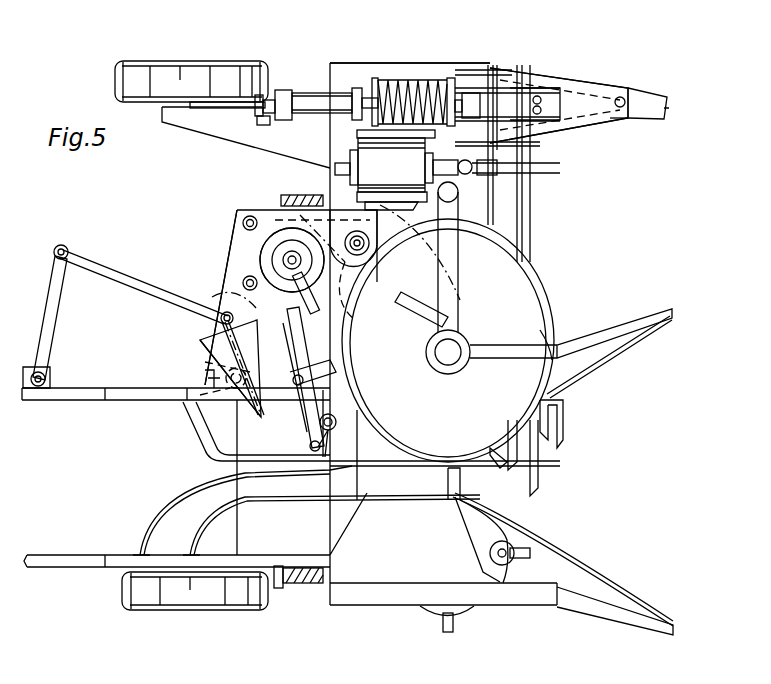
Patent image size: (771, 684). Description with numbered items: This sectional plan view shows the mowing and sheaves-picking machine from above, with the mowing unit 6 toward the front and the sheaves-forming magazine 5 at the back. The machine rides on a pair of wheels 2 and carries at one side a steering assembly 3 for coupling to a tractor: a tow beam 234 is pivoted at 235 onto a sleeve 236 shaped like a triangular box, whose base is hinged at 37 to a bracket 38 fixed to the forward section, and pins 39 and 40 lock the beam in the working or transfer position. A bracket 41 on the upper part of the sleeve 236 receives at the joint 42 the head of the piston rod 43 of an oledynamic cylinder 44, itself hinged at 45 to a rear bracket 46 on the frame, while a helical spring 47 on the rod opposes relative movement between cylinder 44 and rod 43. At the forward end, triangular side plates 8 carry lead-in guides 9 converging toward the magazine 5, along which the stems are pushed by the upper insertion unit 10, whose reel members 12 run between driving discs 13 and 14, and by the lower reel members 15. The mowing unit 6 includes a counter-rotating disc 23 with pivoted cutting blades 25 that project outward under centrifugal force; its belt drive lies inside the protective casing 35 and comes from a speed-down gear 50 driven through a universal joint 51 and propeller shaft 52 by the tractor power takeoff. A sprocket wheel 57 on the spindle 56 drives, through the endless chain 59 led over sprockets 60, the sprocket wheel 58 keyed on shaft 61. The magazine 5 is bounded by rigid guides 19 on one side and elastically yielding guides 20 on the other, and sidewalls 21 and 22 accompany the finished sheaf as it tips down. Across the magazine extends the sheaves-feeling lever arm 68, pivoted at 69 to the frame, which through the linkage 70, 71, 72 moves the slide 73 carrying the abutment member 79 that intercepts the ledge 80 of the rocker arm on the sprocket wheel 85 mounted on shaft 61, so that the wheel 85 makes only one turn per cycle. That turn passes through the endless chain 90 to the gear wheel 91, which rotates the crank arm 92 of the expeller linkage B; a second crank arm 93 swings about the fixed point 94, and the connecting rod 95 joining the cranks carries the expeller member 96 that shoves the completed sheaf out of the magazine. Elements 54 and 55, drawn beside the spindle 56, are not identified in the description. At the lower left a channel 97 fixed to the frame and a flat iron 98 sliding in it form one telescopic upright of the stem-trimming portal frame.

The wheels 2 is at (146, 62).
The steering assembly 3 is at (624, 140).
The magazine 5 is at (193, 480).
The mowing unit 6 is at (530, 533).
The side plates 8 is at (650, 316).
The lead-in guides 9 is at (652, 332).
The upper insertion unit 10 is at (572, 272).
The reel members 12 is at (540, 470).
The driving disc 13 is at (503, 275).
The driving disc 14 is at (553, 312).
The reel members 15 is at (520, 452).
The rigid guides 19 is at (222, 420).
The elastically yielding guides 20 is at (192, 503).
The sheaves-accompanying sidewall 21 is at (62, 566).
The sheaves-accompanying sidewall 22 is at (95, 399).
The cutting disc 23 is at (470, 608).
The cutting blades 25 is at (453, 630).
The protective casing 35 is at (332, 64).
The hinge 37 is at (482, 62).
The bracket 38 is at (455, 134).
The pin 39 is at (560, 108).
The pin 40 is at (538, 97).
The bracket 41 is at (500, 90).
The articulated joint 42 is at (462, 88).
The piston rod 43 is at (366, 96).
The oledynamic cylinder 44 is at (316, 114).
The hinge 45 is at (258, 124).
The rear bracket 46 is at (256, 108).
The helical spring 47 is at (385, 78).
The speed-down gear 50 is at (330, 160).
The universal joint 51 is at (470, 175).
The propeller shaft 52 is at (558, 168).
The link 54 is at (403, 296).
The arc path 55 is at (345, 275).
The spindle 56 is at (362, 258).
The sprocket wheel 57 is at (355, 233).
The sprocket wheel 58 is at (240, 247).
The endless chain 59 is at (240, 222).
The sprockets 60 is at (246, 218).
The shaft 61 is at (270, 262).
The sheaves-feeling lever arm 68 is at (318, 493).
The pivot 69 is at (335, 418).
The linkage element 70 is at (312, 448).
The linkage element 71 is at (282, 410).
The lever arm 72 is at (330, 373).
The slide 73 is at (322, 342).
The abutment member 79 is at (290, 285).
The ledge 80 is at (312, 284).
The sprocket wheel 85 is at (289, 255).
The endless chain 90 is at (214, 336).
The gear wheel 91 is at (200, 394).
The crank arm 92 is at (205, 366).
The second crank arm 93 is at (47, 312).
The fixed point 94 is at (46, 378).
The connecting rod 95 is at (142, 294).
The expeller member 96 is at (212, 381).
The channel 97 is at (278, 589).
The flat iron 98 is at (312, 584).
The tow beam 234 is at (652, 96).
The pivot 235 is at (620, 97).
The sleeve 236 is at (624, 122).
The linkage B is at (129, 265).